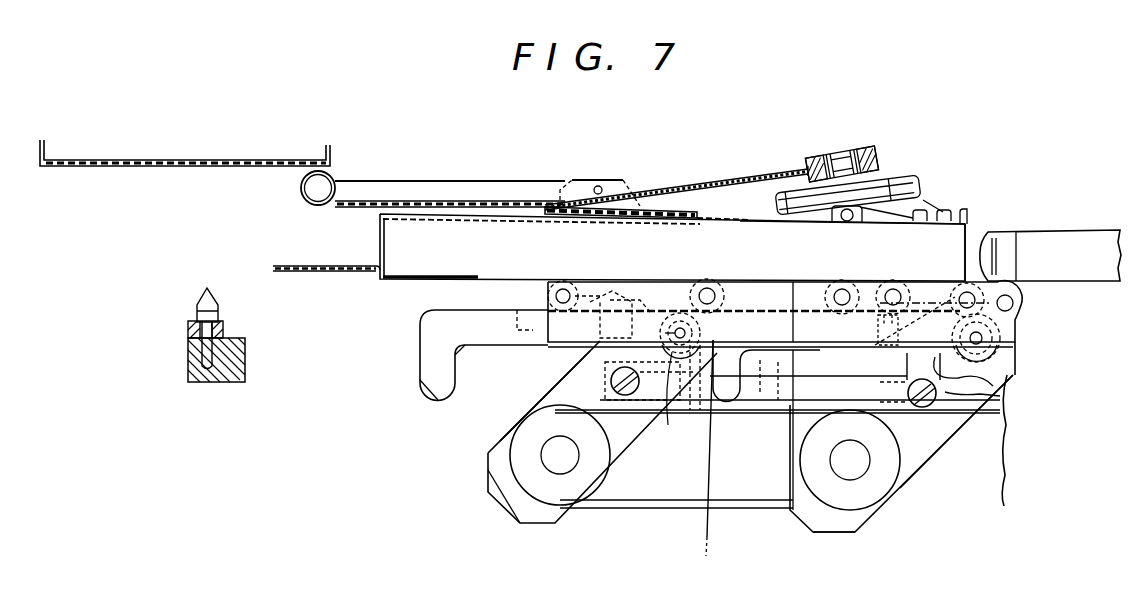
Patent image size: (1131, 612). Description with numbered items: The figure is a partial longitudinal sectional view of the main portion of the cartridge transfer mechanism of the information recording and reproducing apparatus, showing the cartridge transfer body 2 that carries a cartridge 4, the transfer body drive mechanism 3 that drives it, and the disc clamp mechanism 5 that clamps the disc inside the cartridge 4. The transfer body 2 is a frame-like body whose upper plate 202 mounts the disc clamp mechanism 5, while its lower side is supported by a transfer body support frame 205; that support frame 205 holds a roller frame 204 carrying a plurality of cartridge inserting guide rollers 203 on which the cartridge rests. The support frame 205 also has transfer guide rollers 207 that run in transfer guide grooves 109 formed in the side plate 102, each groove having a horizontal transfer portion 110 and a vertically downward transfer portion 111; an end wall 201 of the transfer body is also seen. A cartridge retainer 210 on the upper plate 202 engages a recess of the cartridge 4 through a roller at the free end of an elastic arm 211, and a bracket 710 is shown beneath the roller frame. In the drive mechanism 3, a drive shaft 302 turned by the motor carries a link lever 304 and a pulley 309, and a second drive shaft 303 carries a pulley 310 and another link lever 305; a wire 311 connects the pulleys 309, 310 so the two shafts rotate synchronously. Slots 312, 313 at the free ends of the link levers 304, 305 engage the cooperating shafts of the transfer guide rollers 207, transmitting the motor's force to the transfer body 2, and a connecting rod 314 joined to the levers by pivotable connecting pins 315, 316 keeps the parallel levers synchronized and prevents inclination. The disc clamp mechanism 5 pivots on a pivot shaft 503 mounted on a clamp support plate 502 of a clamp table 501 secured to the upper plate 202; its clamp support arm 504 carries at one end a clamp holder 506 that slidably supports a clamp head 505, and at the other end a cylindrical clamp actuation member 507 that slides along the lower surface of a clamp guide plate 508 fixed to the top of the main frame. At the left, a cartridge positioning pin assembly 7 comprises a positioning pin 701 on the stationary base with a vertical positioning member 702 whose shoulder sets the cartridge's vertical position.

The cartridge transfer body 2 is at (392, 296).
The transfer body drive mechanism 3 is at (659, 533).
The cartridge 4 is at (1104, 224).
The disc clamp mechanism 5 is at (760, 146).
The cartridge positioning pin assembly 7 is at (246, 364).
The side plate 102 is at (1000, 488).
The transfer guide groove 109 is at (488, 346).
The horizontal transfer portion 110 is at (465, 332).
The vertically downward transfer portion 111 is at (426, 383).
The frame side wall 201 is at (976, 233).
The upper plate 202 is at (728, 217).
The cartridge inserting guide roller 203 is at (563, 282).
The roller frame 204 is at (766, 288).
The transfer body support frame 205 is at (796, 300).
The transfer guide roller 207 is at (995, 356).
The cartridge retainer 210 is at (931, 199).
The elastic arm 211 is at (886, 226).
The drive shaft 302 is at (860, 468).
The drive shaft 303 is at (557, 462).
The link lever 304 is at (931, 451).
The link lever 305 is at (545, 391).
The pulley 309 is at (876, 513).
The pulley 310 is at (530, 487).
The wire 311 is at (736, 511).
The slot 312 is at (993, 385).
The slot 313 is at (663, 354).
The connecting rod 314 is at (772, 402).
The pivotable connecting pin 315 is at (978, 414).
The pivotable connecting pin 316 is at (610, 378).
The clamp table 501 is at (655, 206).
The clamp support plate 502 is at (584, 178).
The pivot shaft 503 is at (600, 185).
The clamp support arm 504 is at (700, 183).
The clamp head 505 is at (897, 184).
The clamp holder 506 is at (869, 150).
The clamp actuation member 507 is at (301, 192).
The clamp guide plate 508 is at (203, 160).
The cartridge positioning pin 701 is at (218, 303).
The vertical positioning member 702 is at (224, 330).
The bracket 710 is at (878, 324).